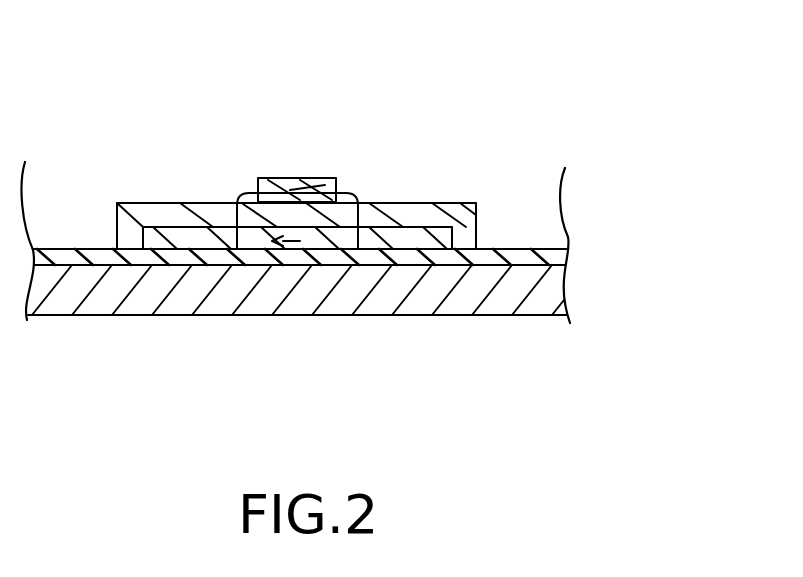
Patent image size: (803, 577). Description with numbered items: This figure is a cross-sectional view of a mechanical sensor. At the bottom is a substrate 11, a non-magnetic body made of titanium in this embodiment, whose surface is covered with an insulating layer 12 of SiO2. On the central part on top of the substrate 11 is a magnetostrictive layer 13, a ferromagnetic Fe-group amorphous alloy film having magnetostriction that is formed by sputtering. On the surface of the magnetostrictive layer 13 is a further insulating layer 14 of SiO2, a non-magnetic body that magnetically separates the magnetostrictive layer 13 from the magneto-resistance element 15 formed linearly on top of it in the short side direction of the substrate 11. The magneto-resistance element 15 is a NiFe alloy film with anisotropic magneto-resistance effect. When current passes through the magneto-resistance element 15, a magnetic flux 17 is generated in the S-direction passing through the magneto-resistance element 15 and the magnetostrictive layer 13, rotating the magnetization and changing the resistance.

The substrate 11 is at (543, 293).
The insulating layer 12 is at (565, 264).
The magnetostrictive layer 13 is at (445, 222).
The insulating layer 14 is at (420, 210).
The magneto-resistance element 15 is at (282, 178).
The magnetic flux 17 is at (247, 200).